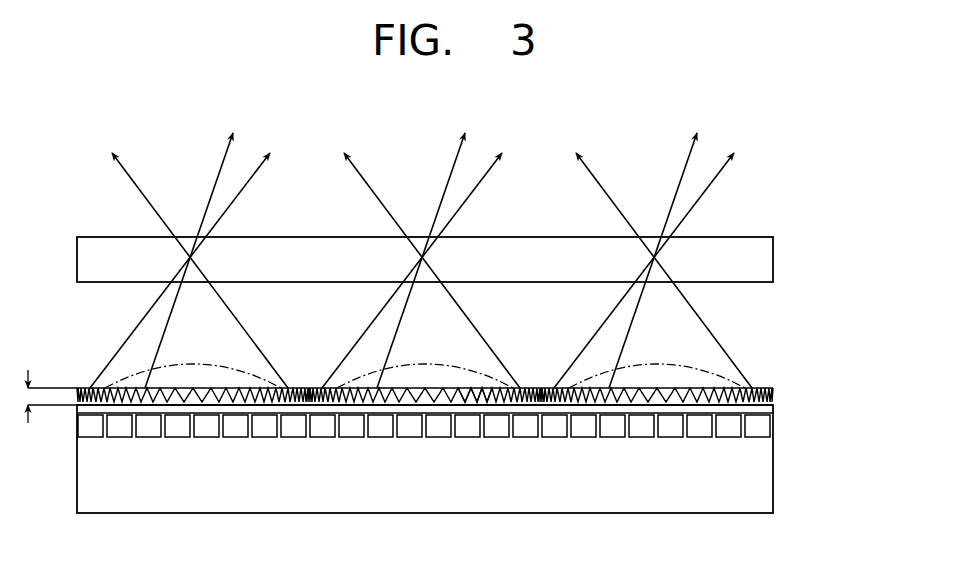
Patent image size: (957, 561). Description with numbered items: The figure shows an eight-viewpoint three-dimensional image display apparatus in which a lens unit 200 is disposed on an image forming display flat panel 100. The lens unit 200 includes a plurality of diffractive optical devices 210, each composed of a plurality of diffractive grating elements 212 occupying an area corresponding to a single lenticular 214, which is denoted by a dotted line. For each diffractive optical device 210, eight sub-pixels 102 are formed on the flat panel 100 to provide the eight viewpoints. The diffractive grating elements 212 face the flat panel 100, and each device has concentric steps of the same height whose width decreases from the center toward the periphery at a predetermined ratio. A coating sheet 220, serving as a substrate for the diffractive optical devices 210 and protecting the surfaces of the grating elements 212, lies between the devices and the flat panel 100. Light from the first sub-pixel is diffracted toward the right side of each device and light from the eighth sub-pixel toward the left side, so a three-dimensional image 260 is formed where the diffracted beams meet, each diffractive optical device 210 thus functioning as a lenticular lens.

The image forming display flat panel 100 is at (762, 475).
The sub-pixels 102 is at (771, 428).
The lens unit 200 is at (812, 356).
The diffractive optical device 210 is at (684, 380).
The diffractive grating elements 212 is at (462, 388).
The lenticular 214 is at (653, 365).
The coating sheet 220 is at (434, 366).
The three-dimensional image 260 is at (773, 258).